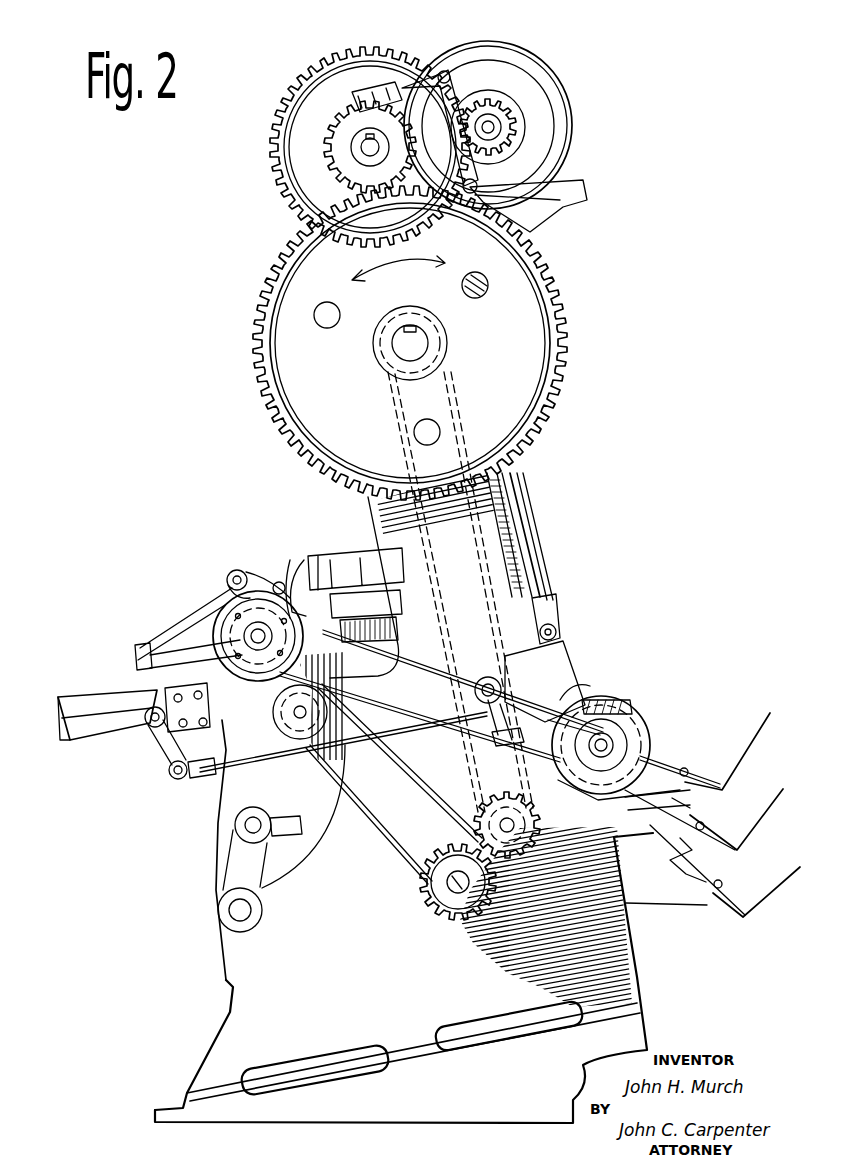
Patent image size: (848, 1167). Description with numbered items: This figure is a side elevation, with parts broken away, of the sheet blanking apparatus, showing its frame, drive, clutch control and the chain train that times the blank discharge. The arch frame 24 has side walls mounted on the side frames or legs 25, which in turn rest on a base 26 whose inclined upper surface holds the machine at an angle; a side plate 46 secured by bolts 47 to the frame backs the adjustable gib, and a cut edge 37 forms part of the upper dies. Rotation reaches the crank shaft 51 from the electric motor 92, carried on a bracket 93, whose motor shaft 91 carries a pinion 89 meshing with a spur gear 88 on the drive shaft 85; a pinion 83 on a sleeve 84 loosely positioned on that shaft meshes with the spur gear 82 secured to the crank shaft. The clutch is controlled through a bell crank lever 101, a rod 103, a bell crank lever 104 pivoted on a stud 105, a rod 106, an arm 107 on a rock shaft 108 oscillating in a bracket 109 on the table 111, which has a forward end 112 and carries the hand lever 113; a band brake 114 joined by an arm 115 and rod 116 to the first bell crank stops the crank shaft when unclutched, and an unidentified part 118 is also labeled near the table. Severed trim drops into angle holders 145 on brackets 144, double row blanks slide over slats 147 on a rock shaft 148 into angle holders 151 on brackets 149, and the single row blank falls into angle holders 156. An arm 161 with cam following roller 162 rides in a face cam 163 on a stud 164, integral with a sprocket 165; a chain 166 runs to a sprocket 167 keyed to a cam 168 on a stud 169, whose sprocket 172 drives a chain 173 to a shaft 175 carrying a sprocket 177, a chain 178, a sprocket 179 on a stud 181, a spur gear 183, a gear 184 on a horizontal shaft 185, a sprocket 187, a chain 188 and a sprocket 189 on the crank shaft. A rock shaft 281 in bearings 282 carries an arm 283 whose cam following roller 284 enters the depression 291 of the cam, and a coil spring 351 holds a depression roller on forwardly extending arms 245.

The arch frame 24 is at (534, 556).
The side frames or legs 25 is at (631, 950).
The base 26 is at (640, 1030).
The cut edge 37 is at (382, 574).
The side plate 46 is at (530, 530).
The bolts 47 is at (518, 503).
The crank shaft 51 is at (420, 344).
The spur gear 82 is at (532, 303).
The pinion 83 is at (330, 134).
The sleeve 84 is at (352, 148).
The drive shaft 85 is at (362, 158).
The spur gear 88 is at (363, 60).
The pinion 89 is at (535, 92).
The motor shaft 91 is at (495, 127).
The electric motor 92 is at (545, 112).
The bracket 93 is at (590, 193).
The bell crank lever 101 is at (478, 184).
The rod 103 is at (546, 580).
The bell crank lever 104 is at (566, 638).
The stud 105 is at (483, 680).
The rod 106 is at (232, 786).
The arm 107 is at (172, 782).
The rock shaft 108 is at (150, 730).
The bracket 109 is at (178, 706).
The table 111 is at (96, 704).
The forward end of table 112 is at (372, 790).
The hand lever 113 is at (82, 742).
The band brake 114 is at (355, 104).
The arm 115 is at (421, 75).
The rod 116 is at (505, 112).
The bracket 118 is at (312, 562).
The brackets 144 is at (664, 862).
The angle holders 145 is at (732, 900).
The slats 147 is at (592, 678).
The rock shaft 148 is at (628, 718).
The brackets 149 is at (697, 792).
The angle holders 151 is at (741, 762).
The angle holders 156 is at (752, 812).
The arm 161 is at (616, 700).
The cam following roller 162 is at (584, 698).
The face cam 163 is at (628, 762).
The stud 164 is at (622, 740).
The sprocket 165 is at (655, 786).
The chain 166 is at (541, 690).
The sprocket 167 is at (216, 608).
The cam 168 is at (280, 582).
The stud 169 is at (259, 628).
The sprocket 172 is at (236, 625).
The chain 173 is at (286, 700).
The shaft 175 is at (266, 816).
The sprocket 177 is at (328, 772).
The chain 178 is at (380, 852).
The sprocket 179 is at (452, 900).
The stud 181 is at (470, 935).
The spur gear 183 is at (428, 896).
The gear 184 is at (524, 830).
The horizontal shaft 185 is at (492, 824).
The sprocket 187 is at (504, 800).
The chain 188 is at (455, 415).
The sprocket 189 is at (385, 382).
The forwardly extending arms 245 is at (318, 548).
The rock shaft 281 is at (226, 588).
The bearings 282 is at (234, 570).
The arm 283 is at (258, 582).
The cam following roller 284 is at (294, 540).
The depression 291 is at (201, 640).
The coil spring 351 is at (388, 602).